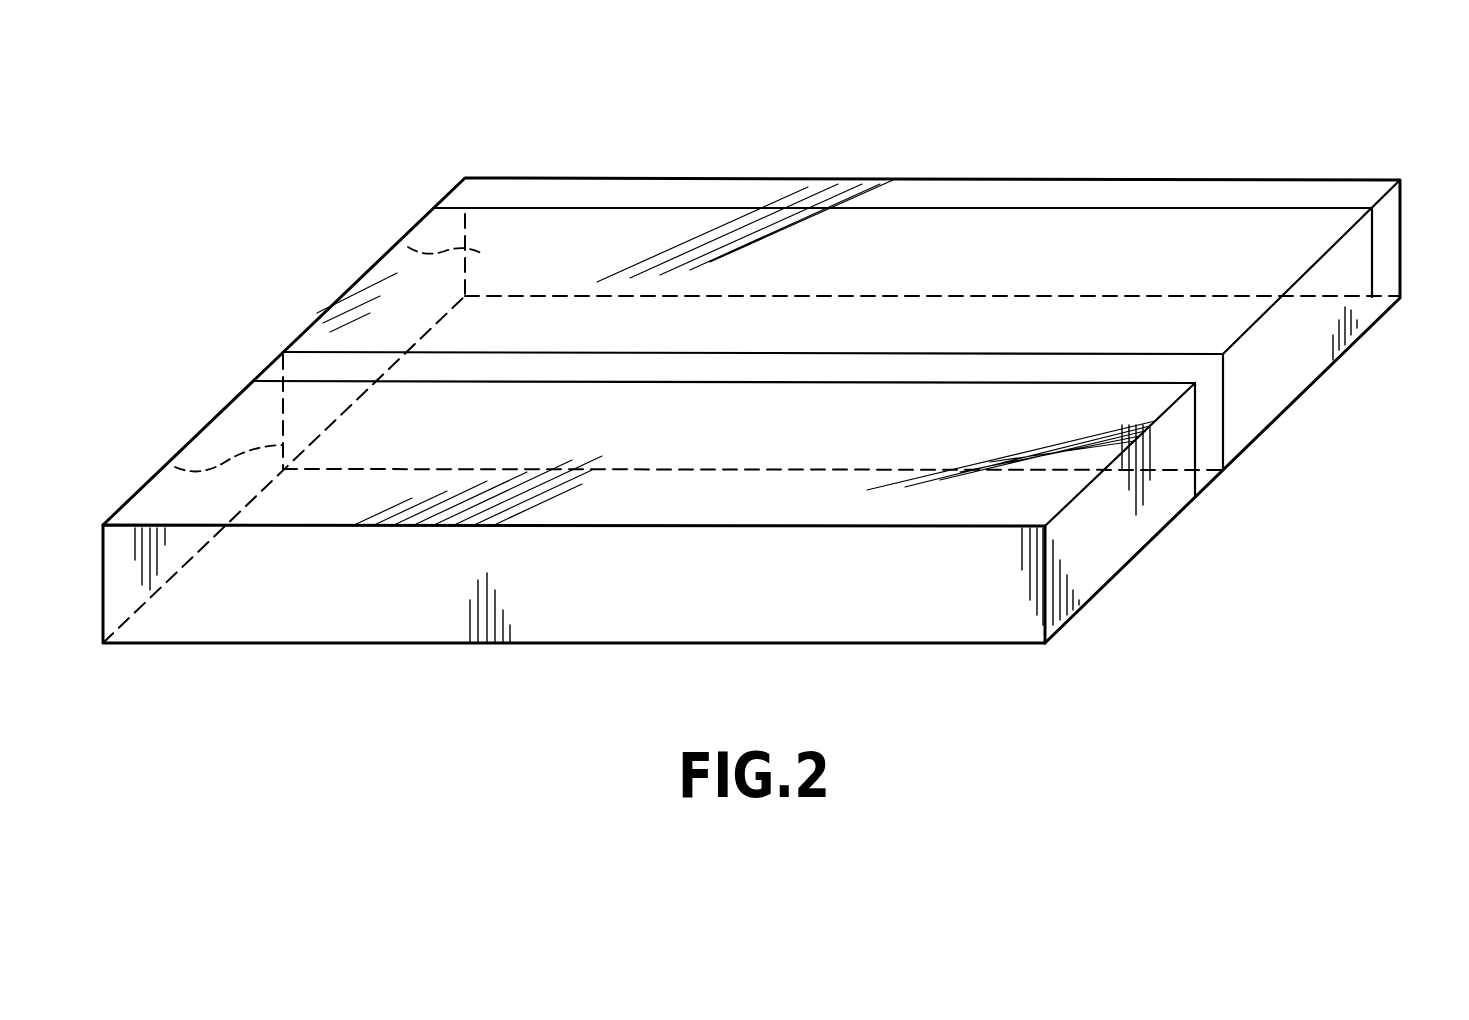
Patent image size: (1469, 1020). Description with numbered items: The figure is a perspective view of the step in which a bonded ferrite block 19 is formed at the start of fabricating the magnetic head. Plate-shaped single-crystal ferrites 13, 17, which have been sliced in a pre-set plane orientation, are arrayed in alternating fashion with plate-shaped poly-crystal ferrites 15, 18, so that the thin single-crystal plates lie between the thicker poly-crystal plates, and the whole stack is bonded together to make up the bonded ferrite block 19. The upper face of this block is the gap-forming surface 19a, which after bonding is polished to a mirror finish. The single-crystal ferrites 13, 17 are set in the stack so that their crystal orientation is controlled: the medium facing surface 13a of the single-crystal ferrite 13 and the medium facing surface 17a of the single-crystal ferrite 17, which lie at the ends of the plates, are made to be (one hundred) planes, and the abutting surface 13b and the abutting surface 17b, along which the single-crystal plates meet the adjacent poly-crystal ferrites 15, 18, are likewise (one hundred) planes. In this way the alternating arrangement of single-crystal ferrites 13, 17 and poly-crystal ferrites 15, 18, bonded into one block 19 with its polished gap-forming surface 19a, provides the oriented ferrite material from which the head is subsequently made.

The single-crystal ferrite 13 is at (1388, 250).
The medium facing surface 13a is at (408, 247).
The abutting surface 13b is at (685, 187).
The poly-crystal ferrite 15 is at (1298, 380).
The single-crystal ferrite 17 is at (1205, 482).
The medium facing surface 17a is at (175, 467).
The abutting surface 17b is at (963, 357).
The poly-crystal ferrite 18 is at (1133, 537).
The bonded ferrite block 19 is at (294, 305).
The gap-forming surface 19a is at (677, 433).